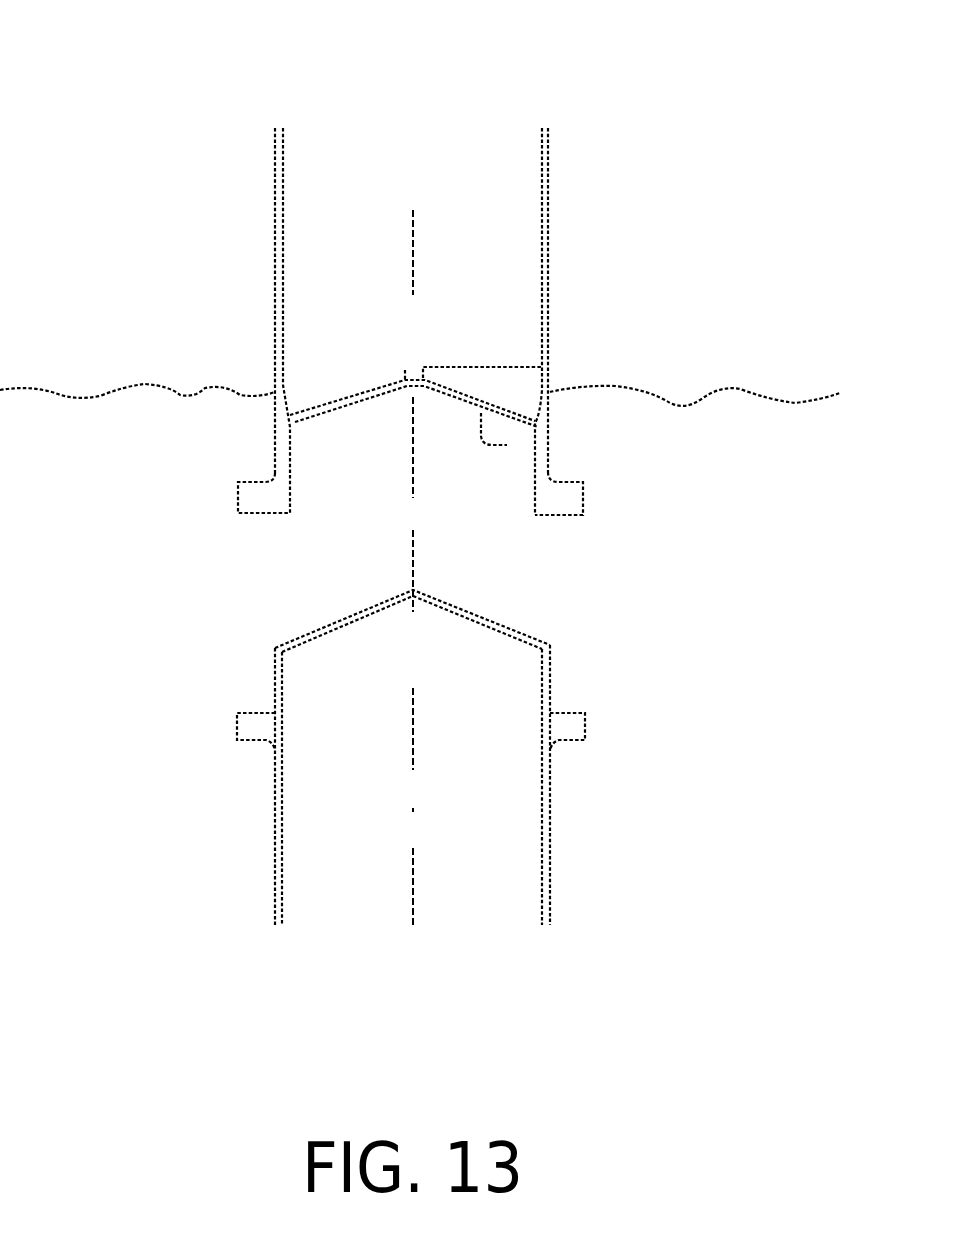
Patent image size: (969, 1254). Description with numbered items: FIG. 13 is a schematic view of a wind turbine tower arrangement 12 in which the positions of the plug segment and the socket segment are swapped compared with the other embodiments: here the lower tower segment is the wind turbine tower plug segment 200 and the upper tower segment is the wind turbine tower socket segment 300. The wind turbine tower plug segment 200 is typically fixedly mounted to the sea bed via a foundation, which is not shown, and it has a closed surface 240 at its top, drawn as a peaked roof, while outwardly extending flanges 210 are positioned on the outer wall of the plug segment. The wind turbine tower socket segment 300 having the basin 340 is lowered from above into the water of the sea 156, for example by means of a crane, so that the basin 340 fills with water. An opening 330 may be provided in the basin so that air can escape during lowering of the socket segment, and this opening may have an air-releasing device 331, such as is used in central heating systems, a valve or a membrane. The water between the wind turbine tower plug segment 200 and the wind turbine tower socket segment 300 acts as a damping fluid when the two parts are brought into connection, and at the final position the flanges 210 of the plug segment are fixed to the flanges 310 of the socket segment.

The valve assembly 12 is at (150, 120).
The wind turbine tower socket segment 300 is at (490, 226).
The flanges 310 is at (238, 482).
The sea 156 is at (792, 472).
The opening 330 is at (402, 378).
The air-releasing device 331 is at (470, 366).
The basin 340 is at (497, 452).
The wind turbine tower plug segment 200 is at (385, 790).
The closed surface 240 is at (503, 620).
The outwardly extending flanges 210 is at (237, 728).